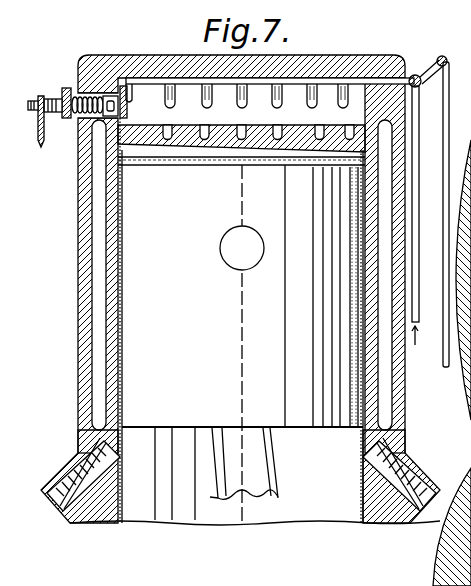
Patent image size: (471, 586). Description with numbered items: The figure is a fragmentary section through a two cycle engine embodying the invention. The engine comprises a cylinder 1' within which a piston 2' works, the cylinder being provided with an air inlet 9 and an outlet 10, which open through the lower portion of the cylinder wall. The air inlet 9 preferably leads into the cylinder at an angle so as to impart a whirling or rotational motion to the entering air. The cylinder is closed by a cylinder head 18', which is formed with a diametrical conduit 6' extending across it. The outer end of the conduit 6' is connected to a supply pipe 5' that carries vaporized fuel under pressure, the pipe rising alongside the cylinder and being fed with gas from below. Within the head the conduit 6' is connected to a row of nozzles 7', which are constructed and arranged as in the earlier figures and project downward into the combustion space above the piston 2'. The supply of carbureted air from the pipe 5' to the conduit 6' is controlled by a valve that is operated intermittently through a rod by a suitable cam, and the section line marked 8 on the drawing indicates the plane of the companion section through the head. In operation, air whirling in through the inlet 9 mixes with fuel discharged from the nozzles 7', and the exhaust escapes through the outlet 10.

The cylinder 1' is at (86, 320).
The piston 2' is at (326, 313).
The supply pipe 5' is at (422, 223).
The diametrical conduit 6' is at (270, 67).
The nozzles 7' is at (256, 73).
The rod / section line 8- 8 is at (418, 77).
The air inlet 9 is at (407, 461).
The outlet 10 is at (73, 457).
The top cover 18' is at (241, 62).